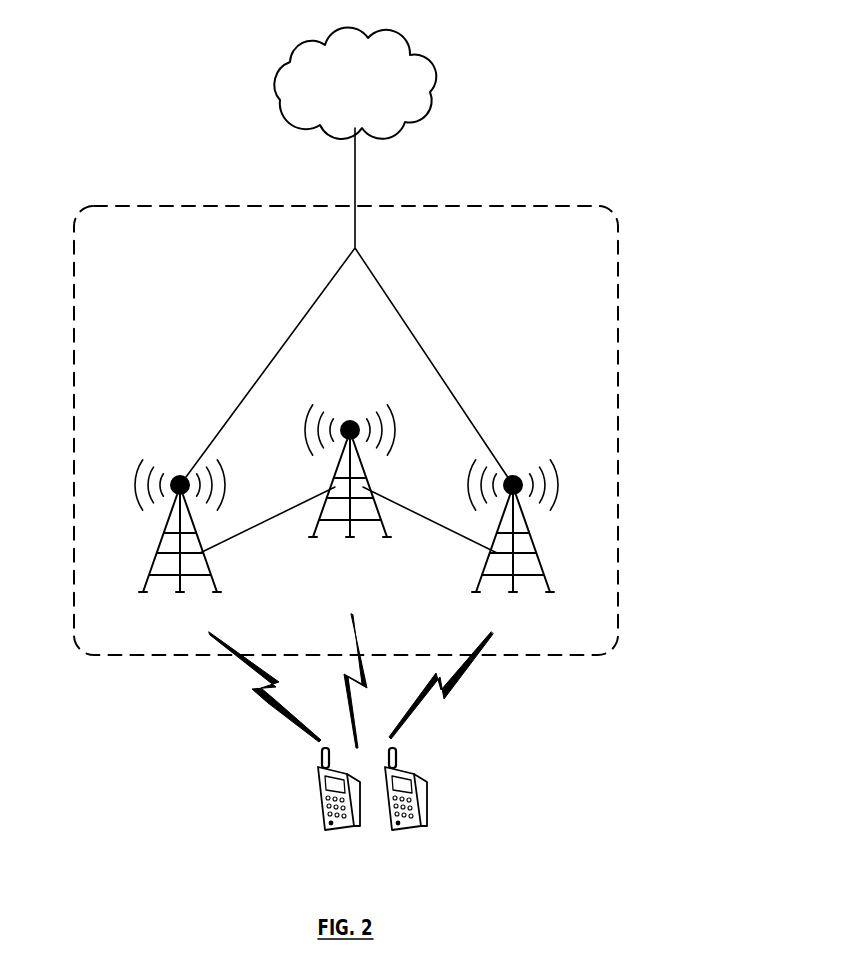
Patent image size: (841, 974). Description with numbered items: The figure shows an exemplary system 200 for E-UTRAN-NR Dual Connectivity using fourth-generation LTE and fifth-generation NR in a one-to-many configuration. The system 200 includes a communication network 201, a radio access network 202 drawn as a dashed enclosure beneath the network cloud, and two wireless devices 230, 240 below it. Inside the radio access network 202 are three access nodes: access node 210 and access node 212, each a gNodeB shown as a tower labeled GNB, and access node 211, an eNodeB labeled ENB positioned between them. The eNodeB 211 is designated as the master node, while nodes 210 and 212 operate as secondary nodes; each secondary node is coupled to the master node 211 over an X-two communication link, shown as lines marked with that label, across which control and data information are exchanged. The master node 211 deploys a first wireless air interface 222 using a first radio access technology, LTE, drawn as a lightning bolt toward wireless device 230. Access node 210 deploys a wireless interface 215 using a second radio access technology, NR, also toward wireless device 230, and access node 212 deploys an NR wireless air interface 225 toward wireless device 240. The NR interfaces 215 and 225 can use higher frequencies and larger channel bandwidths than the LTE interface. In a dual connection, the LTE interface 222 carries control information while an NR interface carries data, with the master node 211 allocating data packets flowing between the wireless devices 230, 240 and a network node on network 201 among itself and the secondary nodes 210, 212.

The system 200 is at (600, 62).
The communication network 201 is at (372, 94).
The radio access network 202 is at (150, 207).
The access node 210 is at (148, 578).
The access node 211 is at (357, 472).
The access node 212 is at (535, 547).
The wireless interface 215 is at (270, 704).
The first wireless air interface 222 is at (350, 660).
The wireless air interface 225 is at (452, 692).
The wireless device 230 is at (342, 828).
The wireless device 240 is at (404, 830).